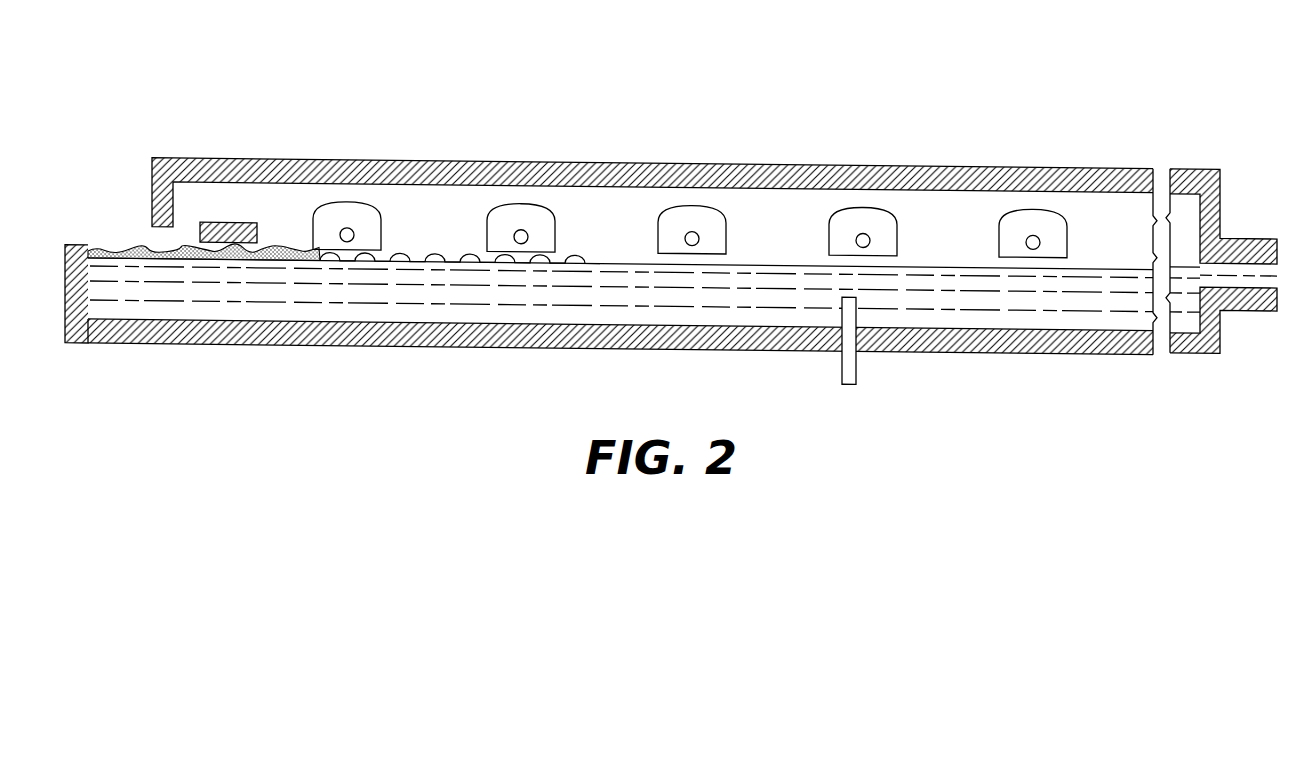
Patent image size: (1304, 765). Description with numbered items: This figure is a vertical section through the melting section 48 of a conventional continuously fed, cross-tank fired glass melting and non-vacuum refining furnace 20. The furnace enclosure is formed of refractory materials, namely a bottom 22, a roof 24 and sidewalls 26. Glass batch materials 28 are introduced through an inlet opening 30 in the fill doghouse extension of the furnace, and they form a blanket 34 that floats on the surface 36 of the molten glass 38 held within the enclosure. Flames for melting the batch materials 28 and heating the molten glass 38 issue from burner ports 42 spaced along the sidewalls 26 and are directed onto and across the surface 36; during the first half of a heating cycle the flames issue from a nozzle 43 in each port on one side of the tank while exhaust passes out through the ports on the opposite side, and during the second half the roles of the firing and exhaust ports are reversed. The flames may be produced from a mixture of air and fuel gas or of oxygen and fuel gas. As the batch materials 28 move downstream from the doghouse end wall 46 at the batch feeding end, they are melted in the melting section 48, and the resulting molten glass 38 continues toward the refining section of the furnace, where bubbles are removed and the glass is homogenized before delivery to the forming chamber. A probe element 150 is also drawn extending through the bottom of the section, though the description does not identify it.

The glass melting and non-vacuum refining furnace 20 is at (651, 208).
The bottom 22 is at (940, 344).
The roof 24 is at (873, 157).
The sidewalls 26 is at (635, 200).
The glass batch materials 28 is at (182, 247).
The inlet opening 30 is at (115, 229).
The blanket 34 is at (288, 248).
The surface 36 is at (808, 258).
The molten glass 38 is at (693, 292).
The burner ports 42 is at (371, 236).
The nozzle 43 is at (350, 225).
The doghouse end wall 46 is at (67, 291).
The melting section 48 is at (1075, 139).
The probe 150 is at (840, 358).